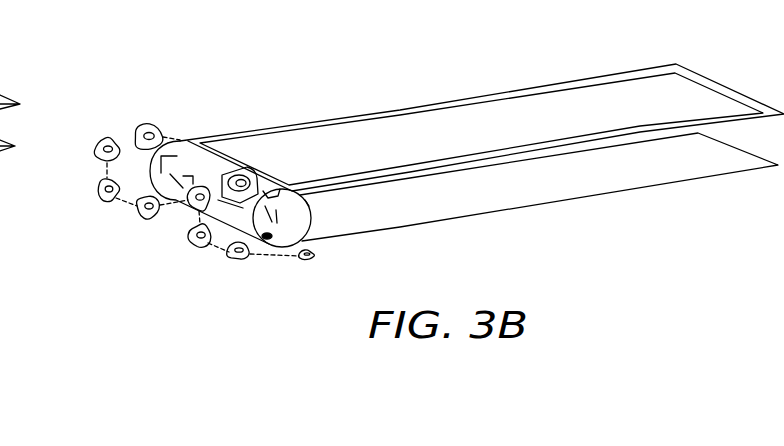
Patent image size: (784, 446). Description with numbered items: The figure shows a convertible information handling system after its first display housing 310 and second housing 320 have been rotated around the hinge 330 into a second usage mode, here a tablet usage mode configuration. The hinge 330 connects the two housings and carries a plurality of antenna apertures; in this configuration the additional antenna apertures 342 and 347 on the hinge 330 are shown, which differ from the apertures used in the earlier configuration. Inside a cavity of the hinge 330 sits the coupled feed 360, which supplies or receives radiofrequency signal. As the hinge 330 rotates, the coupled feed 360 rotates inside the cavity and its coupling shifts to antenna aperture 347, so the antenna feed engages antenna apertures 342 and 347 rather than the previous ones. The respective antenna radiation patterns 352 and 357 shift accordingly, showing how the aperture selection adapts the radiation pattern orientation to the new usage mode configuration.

The first display housing 310 is at (567, 82).
The second housing 320 is at (600, 196).
The hinge 330 is at (275, 246).
The antenna aperture 342 is at (173, 157).
The antenna aperture 347 is at (230, 168).
The antenna radiation pattern 352 is at (132, 206).
The antenna radiation pattern 357 is at (202, 247).
The coupled feed 360 is at (306, 201).